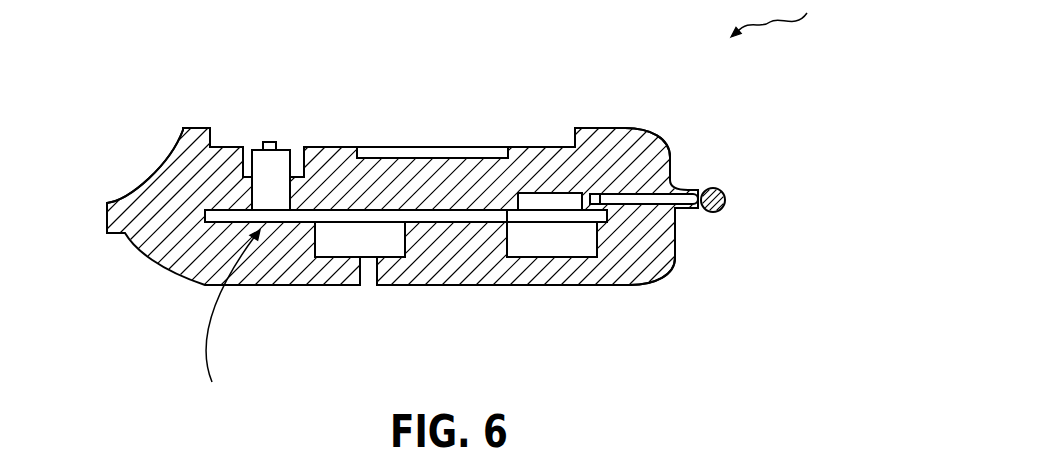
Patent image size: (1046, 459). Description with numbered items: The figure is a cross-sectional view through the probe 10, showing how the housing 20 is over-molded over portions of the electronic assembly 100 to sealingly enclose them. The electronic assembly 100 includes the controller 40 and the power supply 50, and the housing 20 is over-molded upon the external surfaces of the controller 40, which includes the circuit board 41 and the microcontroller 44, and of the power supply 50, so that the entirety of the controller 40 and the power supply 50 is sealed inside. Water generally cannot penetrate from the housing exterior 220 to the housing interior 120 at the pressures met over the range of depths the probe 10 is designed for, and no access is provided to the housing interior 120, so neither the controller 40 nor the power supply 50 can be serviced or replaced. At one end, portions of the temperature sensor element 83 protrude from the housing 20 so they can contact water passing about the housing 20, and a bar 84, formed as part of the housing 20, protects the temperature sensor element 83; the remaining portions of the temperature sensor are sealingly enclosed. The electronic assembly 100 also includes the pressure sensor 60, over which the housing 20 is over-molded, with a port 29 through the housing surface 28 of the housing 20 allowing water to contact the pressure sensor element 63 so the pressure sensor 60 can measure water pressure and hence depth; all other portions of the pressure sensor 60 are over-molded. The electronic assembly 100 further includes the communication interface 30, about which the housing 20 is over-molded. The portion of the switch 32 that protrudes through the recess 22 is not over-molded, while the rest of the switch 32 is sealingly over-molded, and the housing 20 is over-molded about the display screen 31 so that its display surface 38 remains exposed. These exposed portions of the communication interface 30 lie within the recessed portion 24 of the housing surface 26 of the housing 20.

The probe 10 is at (777, 229).
The housing 20 is at (150, 264).
The recess 22 is at (298, 148).
The recessed portion 24 is at (227, 147).
The housing surface 26 is at (195, 128).
The housing surface 28 is at (270, 286).
The port 29 is at (372, 271).
The communication interface 30 is at (268, 142).
The display screen 31 is at (395, 155).
The switch 32 is at (260, 147).
The display surface 38 is at (428, 146).
The controller 40 is at (488, 215).
The circuit board 41 is at (455, 215).
The microcontroller 44 is at (538, 196).
The power supply 50 is at (541, 240).
The pressure sensor 60 is at (343, 242).
The pressure sensor element 63 is at (366, 262).
The temperature sensor element 83 is at (688, 190).
The bar 84 is at (722, 188).
The electronic assembly 100 is at (230, 321).
The housing interior 120 is at (648, 252).
The housing exterior 220 is at (627, 128).